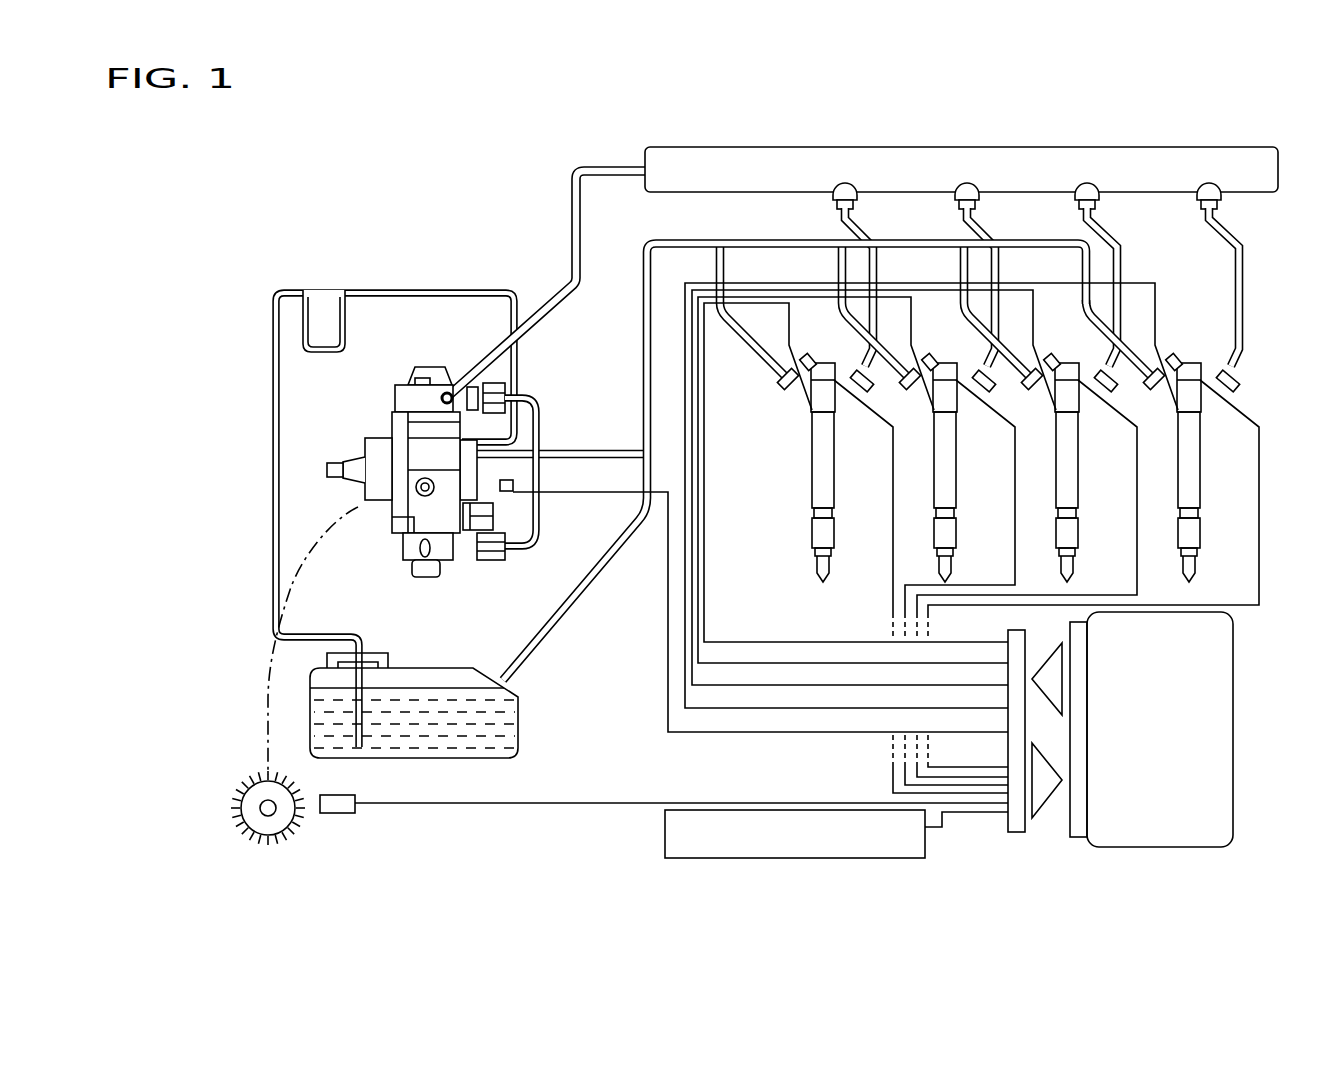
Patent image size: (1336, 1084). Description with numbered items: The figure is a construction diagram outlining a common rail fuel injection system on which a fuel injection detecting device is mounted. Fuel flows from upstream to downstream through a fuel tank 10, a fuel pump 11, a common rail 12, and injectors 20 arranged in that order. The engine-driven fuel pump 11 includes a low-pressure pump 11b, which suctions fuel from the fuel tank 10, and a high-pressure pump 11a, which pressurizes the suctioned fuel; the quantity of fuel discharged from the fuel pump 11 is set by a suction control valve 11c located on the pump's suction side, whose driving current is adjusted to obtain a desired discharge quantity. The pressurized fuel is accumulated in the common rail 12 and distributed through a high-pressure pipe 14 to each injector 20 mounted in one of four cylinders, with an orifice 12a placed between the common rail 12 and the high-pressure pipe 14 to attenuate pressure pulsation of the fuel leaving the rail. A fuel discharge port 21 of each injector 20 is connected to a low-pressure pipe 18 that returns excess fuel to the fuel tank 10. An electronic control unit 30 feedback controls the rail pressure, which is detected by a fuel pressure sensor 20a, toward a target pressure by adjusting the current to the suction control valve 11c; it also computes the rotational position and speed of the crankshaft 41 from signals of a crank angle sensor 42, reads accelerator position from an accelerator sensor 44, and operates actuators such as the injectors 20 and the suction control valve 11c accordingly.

The fuel tank 10 is at (447, 667).
The fuel pump 11 is at (663, 528).
The high-pressure pump 11a is at (421, 370).
The low-pressure pump 11b is at (520, 438).
The suction control valve 11c is at (516, 486).
The common rail 12 is at (1040, 162).
The orifice 12a is at (854, 205).
The high-pressure pipe 14 is at (877, 265).
The low-pressure pipe 18 is at (696, 240).
The injector 20 is at (835, 452).
The fuel pressure sensor 20a is at (852, 369).
The fuel discharge port 21 is at (782, 383).
The electronic control unit 30 is at (1234, 727).
The crankshaft 41 is at (268, 818).
The crank angle sensor 42 is at (340, 814).
The accelerator sensor 44 is at (664, 833).